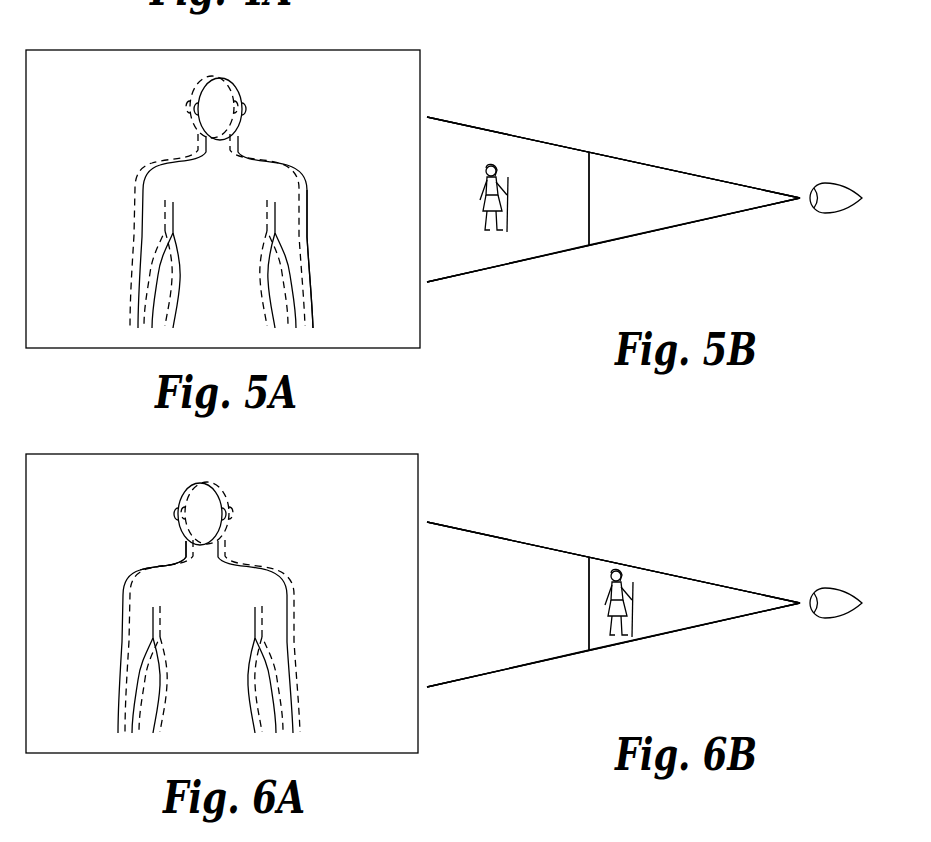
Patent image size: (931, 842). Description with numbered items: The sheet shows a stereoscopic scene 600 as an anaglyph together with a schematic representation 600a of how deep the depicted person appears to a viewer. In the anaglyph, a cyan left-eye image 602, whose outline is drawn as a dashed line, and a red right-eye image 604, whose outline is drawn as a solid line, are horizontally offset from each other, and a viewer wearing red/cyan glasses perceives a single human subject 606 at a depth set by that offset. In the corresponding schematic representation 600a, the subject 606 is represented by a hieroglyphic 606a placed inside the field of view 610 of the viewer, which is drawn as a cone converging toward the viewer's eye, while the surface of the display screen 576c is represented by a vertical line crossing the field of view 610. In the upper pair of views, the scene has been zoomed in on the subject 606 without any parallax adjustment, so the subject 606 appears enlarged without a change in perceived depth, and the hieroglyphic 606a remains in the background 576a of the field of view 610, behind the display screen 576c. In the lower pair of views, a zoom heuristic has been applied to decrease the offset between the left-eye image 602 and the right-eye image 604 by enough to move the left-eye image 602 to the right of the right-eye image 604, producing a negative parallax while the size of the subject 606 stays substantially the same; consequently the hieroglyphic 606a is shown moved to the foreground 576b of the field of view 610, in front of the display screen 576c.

In FIG. 5B, the stereoscopic scene 600 is at (447, 62).
In FIG. 6B, the stereoscopic scene 600 is at (447, 467).
In FIG. 5B, the schematic representation 600a is at (680, 122).
In FIG. 6B, the schematic representation 600a is at (680, 527).
In FIG. 5A, the left-eye image 602 is at (192, 128).
In FIG. 6A, the left-eye image 602 is at (298, 693).
In FIG. 5A, the right-eye image 604 is at (315, 287).
In FIG. 6A, the right-eye image 604 is at (178, 550).
In FIG. 5A, the figure 606 is at (268, 150).
In FIG. 6A, the figure 606 is at (260, 547).
In FIG. 5B, the hieroglyphic figure 606a is at (492, 173).
In FIG. 6B, the hieroglyphic figure 606a is at (605, 585).
In FIG. 5B, the field of view 610 is at (737, 184).
In FIG. 6B, the field of view 610 is at (737, 589).
In FIG. 5B, the background 576a is at (503, 252).
In FIG. 6B, the background 576a is at (503, 657).
In FIG. 5B, the foreground 576b is at (701, 213).
In FIG. 6B, the foreground 576b is at (701, 618).
In FIG. 5B, the display screen 576c is at (593, 233).
In FIG. 6B, the display screen 576c is at (593, 638).